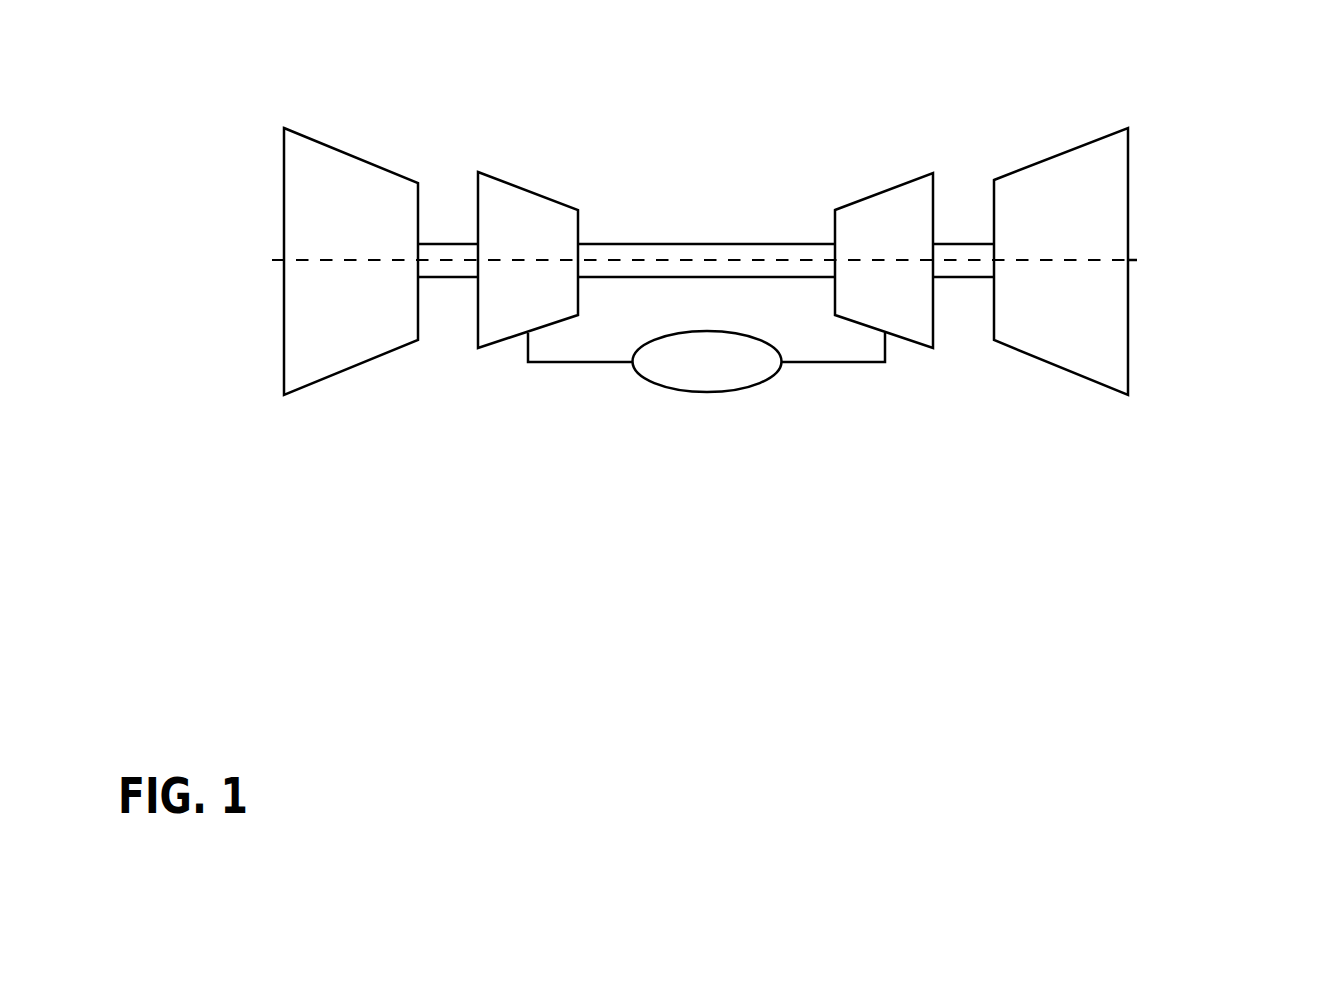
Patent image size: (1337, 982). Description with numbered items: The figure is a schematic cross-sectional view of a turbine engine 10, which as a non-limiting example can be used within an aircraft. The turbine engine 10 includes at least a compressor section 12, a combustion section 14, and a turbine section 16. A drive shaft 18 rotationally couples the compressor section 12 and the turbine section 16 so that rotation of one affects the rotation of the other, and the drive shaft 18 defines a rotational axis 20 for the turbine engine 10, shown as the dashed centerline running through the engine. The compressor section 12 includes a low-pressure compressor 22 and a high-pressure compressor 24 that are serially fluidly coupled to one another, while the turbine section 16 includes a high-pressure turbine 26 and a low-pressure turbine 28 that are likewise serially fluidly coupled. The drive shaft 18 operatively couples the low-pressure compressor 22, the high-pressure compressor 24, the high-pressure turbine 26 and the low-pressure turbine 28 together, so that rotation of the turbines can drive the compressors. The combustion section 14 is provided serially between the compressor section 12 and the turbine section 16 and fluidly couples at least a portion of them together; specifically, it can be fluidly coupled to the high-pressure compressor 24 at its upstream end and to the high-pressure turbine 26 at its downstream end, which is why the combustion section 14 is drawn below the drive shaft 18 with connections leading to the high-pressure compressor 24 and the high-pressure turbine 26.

The turbine engine 10 is at (1313, 143).
The compressor section 12 is at (365, 227).
The combustion section 14 is at (665, 390).
The turbine section 16 is at (1099, 227).
The drive shaft 18 is at (707, 244).
The rotational axis 20 is at (1135, 258).
The low-pressure compressor 22 is at (388, 168).
The high-pressure compressor 24 is at (540, 197).
The high-pressure turbine 26 is at (935, 203).
The low-pressure turbine 28 is at (1128, 178).